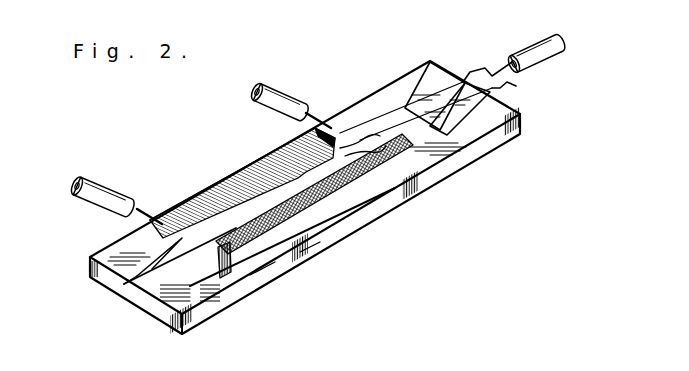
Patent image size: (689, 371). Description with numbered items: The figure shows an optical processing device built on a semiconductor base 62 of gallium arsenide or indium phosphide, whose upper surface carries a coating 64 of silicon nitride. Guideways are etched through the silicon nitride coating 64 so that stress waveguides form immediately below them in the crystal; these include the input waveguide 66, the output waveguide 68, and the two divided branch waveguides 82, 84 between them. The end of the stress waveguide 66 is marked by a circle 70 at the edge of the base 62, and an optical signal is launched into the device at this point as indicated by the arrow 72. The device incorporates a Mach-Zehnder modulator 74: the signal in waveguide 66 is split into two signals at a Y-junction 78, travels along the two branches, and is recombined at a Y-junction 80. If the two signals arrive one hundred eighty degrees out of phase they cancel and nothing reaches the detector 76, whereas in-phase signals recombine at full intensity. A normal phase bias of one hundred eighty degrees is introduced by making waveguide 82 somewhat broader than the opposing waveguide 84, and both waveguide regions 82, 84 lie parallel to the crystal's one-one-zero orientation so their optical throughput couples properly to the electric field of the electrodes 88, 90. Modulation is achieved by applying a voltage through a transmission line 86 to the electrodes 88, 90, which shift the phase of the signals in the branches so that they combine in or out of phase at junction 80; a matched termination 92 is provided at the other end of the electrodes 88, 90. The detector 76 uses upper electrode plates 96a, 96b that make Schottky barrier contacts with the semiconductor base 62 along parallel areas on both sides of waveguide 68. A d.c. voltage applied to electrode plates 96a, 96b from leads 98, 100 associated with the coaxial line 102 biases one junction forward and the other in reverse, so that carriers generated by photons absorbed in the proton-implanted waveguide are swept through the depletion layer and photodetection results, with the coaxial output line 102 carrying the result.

The semiconductor base 62 is at (377, 212).
The coating of silicon nitride 64 is at (103, 260).
The stress waveguide 66 is at (163, 280).
The stress waveguide 68 is at (423, 177).
The circle 70 is at (134, 298).
The arrow 72 is at (112, 302).
The Mach-Zehnder modulator 74 is at (311, 250).
The detector 76 is at (439, 74).
The Y-junction 78 is at (229, 283).
The Y-junction 80 is at (374, 140).
The waveguide 82 is at (240, 198).
The waveguide 84 is at (347, 220).
The transmission line 86 is at (82, 178).
The electrode 88 is at (178, 207).
The electrode 90 is at (263, 273).
The matched termination 92 is at (268, 82).
The electrode plate 96a is at (425, 96).
The electrode plate 96b is at (508, 140).
The lead 98 is at (475, 70).
The lead 100 is at (514, 88).
The coaxial line 102 is at (541, 36).